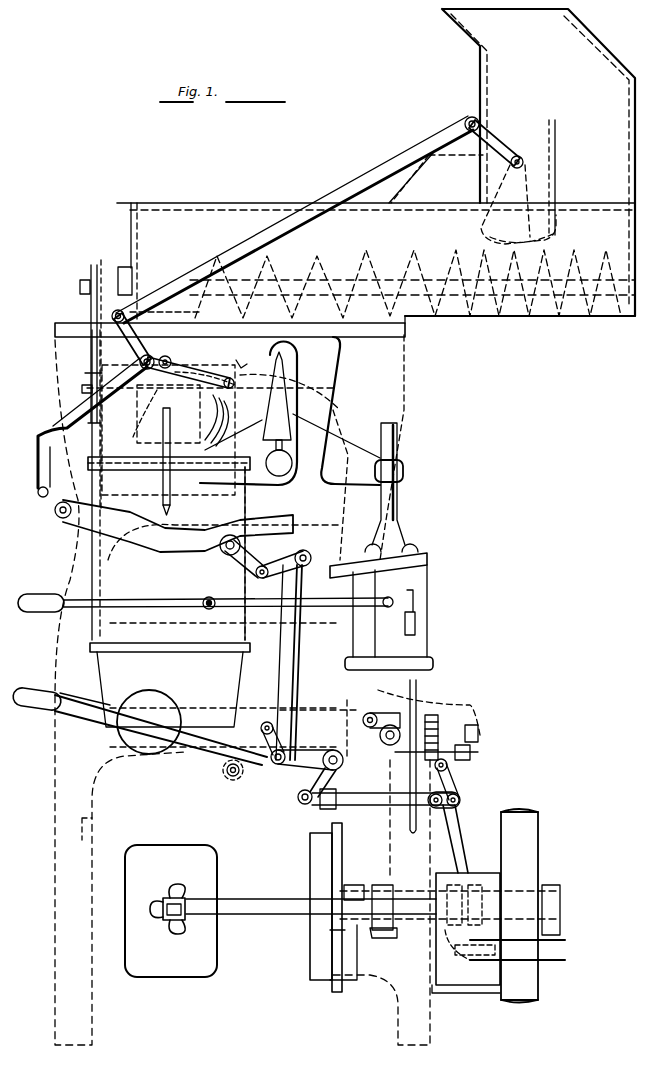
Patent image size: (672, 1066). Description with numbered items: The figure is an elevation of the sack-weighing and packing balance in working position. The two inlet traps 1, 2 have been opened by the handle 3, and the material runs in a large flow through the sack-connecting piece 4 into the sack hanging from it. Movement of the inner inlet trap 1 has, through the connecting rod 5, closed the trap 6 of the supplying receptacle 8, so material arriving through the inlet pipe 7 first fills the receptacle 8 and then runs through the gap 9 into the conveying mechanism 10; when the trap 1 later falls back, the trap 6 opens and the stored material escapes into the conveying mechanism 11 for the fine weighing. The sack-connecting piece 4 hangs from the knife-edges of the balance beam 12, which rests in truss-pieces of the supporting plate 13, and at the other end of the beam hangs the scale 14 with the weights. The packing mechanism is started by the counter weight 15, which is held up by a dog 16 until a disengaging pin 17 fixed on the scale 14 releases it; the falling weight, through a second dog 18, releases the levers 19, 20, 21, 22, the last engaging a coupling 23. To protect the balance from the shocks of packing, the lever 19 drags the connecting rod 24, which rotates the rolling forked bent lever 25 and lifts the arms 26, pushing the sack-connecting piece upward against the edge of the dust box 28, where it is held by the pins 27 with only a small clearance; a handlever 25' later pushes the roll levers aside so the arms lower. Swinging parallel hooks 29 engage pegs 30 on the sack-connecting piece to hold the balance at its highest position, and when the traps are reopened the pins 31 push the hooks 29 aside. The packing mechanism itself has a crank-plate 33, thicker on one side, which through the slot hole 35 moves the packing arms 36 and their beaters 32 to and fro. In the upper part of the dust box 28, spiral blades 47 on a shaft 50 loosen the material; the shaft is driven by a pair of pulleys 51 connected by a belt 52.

The inner inlet trap 1 is at (226, 376).
The inlet trap 2 is at (230, 397).
The handle 3 is at (38, 463).
The sack-connecting piece 4 is at (92, 630).
The connecting rod 5 is at (352, 188).
The trap 6 is at (482, 238).
The inlet pipe 7 is at (538, 162).
The supplying receptacle 8 is at (536, 174).
The gap 9 is at (610, 195).
The conveying mechanism 10 is at (279, 203).
The conveying mechanism 11 is at (412, 276).
The balance beam 12 is at (268, 418).
The supporting plate 13 is at (373, 337).
The scale 14 is at (404, 526).
The counter weight 15 is at (152, 703).
The dog 16 is at (366, 736).
The disengaging pin 17 is at (420, 756).
The second dog 18 is at (250, 722).
The lever 19 is at (247, 775).
The lever 20 is at (307, 773).
The lever 21 is at (365, 805).
The lever 22 is at (468, 828).
The coupling 23 is at (482, 892).
The connecting rod 24 is at (298, 657).
The rolling forked bent lever 25 is at (265, 556).
The handlever 25' is at (205, 594).
The arms 26 is at (193, 548).
The pins 27 is at (88, 463).
The dust box 28 is at (83, 373).
The parallel hooks 29 is at (172, 360).
The pegs 30 is at (177, 460).
The pins 31 is at (184, 404).
The beaters 32 is at (217, 871).
The crank-plate 33 is at (343, 852).
The slot hole 35 is at (310, 855).
The packing arms 36 is at (266, 899).
The spiral blades 47 is at (156, 381).
The shaft 50 is at (199, 388).
The pulleys 51 is at (88, 271).
The belt 52 is at (88, 316).